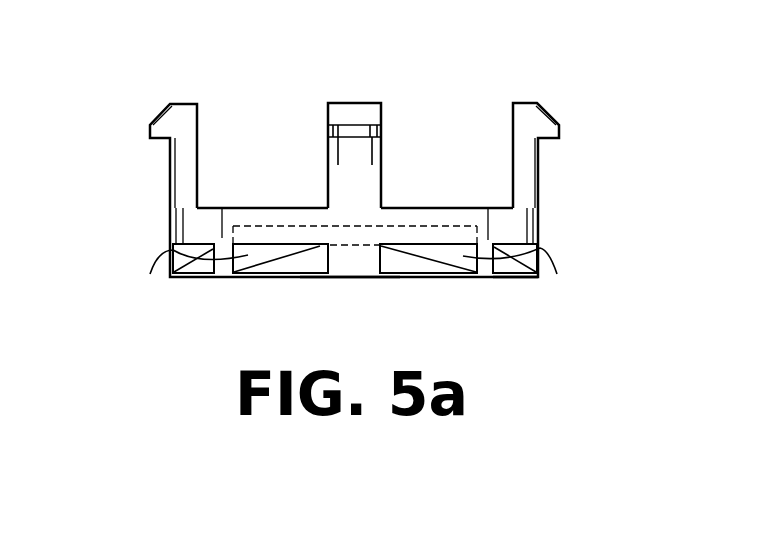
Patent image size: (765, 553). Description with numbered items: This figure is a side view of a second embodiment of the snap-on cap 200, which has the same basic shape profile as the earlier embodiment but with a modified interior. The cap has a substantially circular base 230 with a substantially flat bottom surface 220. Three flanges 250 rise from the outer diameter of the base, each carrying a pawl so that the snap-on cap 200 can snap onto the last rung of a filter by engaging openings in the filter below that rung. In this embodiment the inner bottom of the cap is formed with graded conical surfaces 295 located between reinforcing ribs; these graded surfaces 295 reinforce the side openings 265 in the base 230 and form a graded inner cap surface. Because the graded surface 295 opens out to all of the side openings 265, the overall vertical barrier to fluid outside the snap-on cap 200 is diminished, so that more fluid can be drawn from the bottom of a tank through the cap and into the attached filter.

The snap-on cap 200 is at (138, 186).
The flange 250 is at (167, 118).
The graded conical surface 295 is at (285, 266).
The side opening 265 is at (355, 273).
The bottom surface 220 is at (343, 278).
The base 230 is at (522, 274).